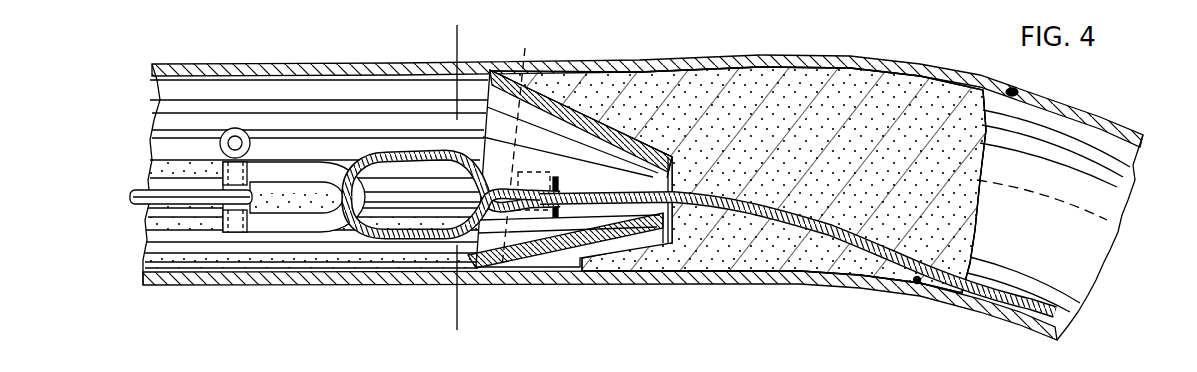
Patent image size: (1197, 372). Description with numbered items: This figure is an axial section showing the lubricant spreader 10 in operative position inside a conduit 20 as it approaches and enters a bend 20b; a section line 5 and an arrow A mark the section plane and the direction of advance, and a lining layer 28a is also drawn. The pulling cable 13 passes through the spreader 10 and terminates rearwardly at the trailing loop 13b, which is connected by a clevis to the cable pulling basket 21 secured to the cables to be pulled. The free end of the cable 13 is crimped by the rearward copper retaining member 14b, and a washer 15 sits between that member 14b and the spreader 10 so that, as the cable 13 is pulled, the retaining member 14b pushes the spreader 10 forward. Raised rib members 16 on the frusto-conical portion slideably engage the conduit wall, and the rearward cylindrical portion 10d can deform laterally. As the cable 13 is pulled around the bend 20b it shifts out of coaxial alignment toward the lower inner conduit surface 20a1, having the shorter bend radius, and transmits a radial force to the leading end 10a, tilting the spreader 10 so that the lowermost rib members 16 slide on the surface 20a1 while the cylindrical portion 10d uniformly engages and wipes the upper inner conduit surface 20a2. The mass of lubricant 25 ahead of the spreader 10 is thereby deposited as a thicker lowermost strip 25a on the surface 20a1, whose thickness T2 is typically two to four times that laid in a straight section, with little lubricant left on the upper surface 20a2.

The section line 5- 5 is at (446, 35).
The lubricant spreader 10 is at (603, 174).
The leading end 10a is at (676, 162).
The rearward cylindrical portion 10d is at (575, 145).
The pulling cable 13 is at (1021, 296).
The trailing loop 13b is at (405, 156).
The rearward copper retaining member 14b is at (523, 180).
The washer 15 is at (555, 177).
The rib members 16 is at (578, 82).
The conduit 20 is at (928, 74).
The lower inner conduit surface 20a1 is at (917, 284).
The upper inner conduit surface 20a2 is at (1012, 88).
The bend 20b is at (1128, 124).
The cable pulling basket 21 is at (280, 172).
The lubricant 25 is at (829, 90).
The lowermost strip of lubricant 25a is at (150, 168).
The inner lining layer 28a is at (280, 262).
The direction arrow A is at (496, 284).
The thickness of lowermost lubricant strip T2 is at (333, 243).